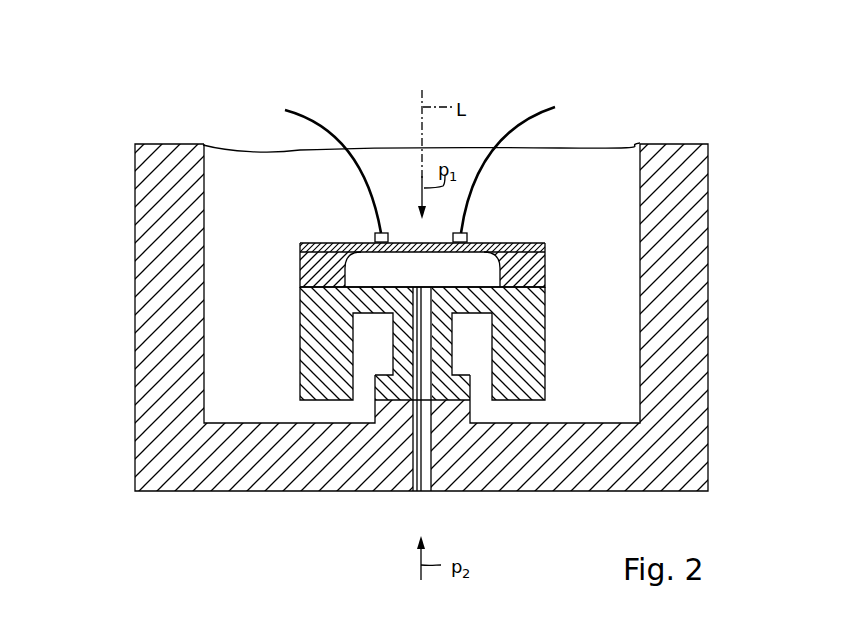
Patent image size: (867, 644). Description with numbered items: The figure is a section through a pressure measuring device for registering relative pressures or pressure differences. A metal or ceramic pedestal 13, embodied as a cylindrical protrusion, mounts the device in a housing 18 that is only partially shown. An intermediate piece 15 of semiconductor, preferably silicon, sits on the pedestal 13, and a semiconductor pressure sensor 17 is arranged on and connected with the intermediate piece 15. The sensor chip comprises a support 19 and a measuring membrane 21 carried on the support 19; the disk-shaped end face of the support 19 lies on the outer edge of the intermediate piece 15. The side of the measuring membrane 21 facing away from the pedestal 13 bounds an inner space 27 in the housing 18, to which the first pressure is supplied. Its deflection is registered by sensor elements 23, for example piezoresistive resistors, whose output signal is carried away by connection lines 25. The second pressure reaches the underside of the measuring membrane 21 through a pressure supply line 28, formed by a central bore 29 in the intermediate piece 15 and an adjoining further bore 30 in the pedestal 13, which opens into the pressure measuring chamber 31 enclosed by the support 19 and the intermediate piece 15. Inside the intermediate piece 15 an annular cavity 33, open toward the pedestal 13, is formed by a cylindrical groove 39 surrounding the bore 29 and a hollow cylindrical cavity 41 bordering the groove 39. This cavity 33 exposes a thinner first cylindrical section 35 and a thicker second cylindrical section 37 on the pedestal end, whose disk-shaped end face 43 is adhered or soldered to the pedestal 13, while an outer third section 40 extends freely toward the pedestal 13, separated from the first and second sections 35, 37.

The pedestal 13 is at (393, 413).
The intermediate piece 15 is at (318, 323).
The semiconductor pressure sensor 17 is at (322, 242).
The housing 18 is at (692, 450).
The support 19 is at (530, 268).
The measuring membrane 21 is at (407, 243).
The sensor elements 23 is at (375, 237).
The connection lines 25 is at (340, 132).
The inner space 27 is at (246, 216).
The pressure supply line 28 is at (423, 492).
The bore 29 is at (423, 370).
The further bore 30 is at (427, 467).
The pressure measuring chamber 31 is at (405, 274).
The annular cavity 33 is at (477, 348).
The first cylindrical section 35 is at (447, 333).
The second cylindrical section 37 is at (465, 383).
The cylindrical groove 39 is at (365, 387).
The third section 40 is at (318, 388).
The hollow cylindrical cavity 41 is at (366, 342).
The end face 43 is at (466, 383).